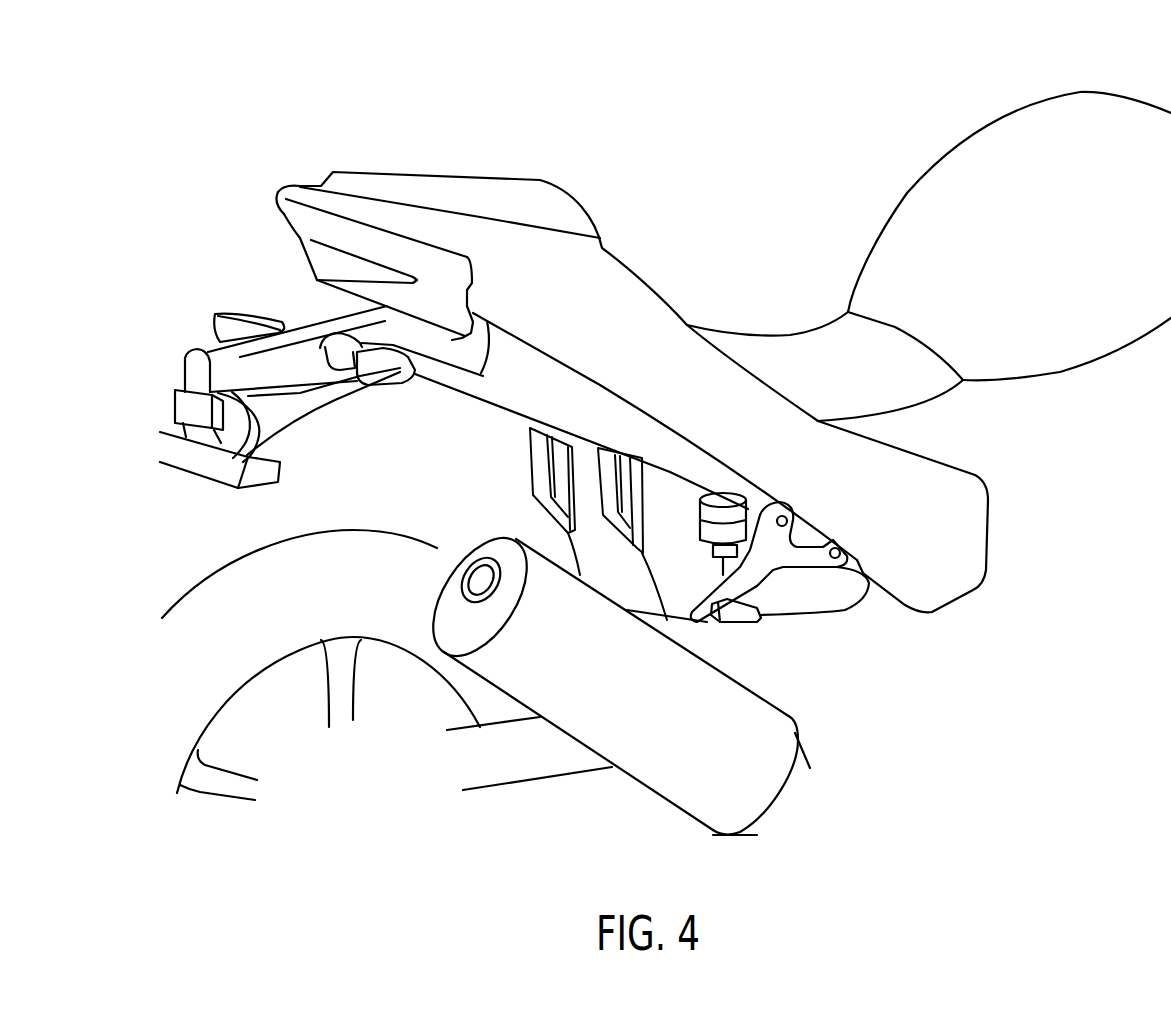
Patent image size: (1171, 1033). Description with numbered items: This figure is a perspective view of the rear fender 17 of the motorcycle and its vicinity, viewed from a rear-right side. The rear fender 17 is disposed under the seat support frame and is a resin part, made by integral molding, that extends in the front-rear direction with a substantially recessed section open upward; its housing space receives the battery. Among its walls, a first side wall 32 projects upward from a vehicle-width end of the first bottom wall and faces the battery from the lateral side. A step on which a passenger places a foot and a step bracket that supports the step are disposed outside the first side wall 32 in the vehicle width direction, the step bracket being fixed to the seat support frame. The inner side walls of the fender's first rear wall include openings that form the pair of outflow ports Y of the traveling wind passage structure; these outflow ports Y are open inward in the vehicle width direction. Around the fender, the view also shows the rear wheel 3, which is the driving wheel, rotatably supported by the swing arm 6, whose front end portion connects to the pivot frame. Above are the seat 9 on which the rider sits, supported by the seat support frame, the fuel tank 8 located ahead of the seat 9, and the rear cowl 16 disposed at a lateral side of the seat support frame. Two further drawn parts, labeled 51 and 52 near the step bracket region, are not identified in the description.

The rear wheel 3 is at (232, 587).
The swing arm 6 is at (548, 763).
The fuel tank 8 is at (955, 184).
The seat 9 is at (793, 347).
The rear cowl 16 is at (574, 258).
The rear fender 17 is at (487, 401).
The first side wall 32 is at (842, 588).
The pad 51 is at (742, 620).
The bracket 52 is at (764, 573).
The outflow ports Y is at (607, 488).